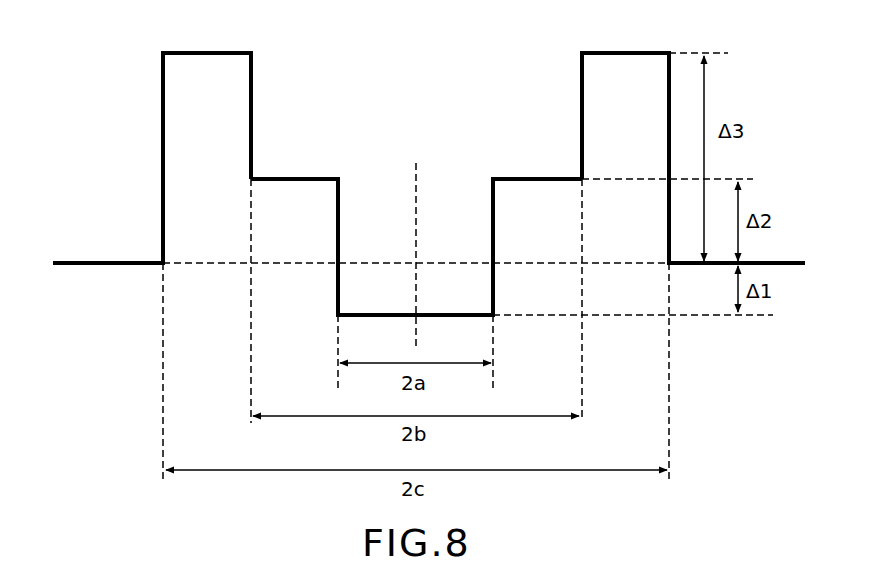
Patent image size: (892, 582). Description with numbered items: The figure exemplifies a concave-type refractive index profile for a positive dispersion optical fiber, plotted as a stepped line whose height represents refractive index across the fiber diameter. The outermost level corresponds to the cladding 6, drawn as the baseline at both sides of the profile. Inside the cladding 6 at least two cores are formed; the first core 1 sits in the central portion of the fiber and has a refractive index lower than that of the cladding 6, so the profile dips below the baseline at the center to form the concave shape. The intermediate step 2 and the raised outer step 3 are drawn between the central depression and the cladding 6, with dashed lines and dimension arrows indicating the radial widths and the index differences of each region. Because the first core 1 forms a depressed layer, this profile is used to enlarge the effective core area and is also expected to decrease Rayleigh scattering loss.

The first core 1 is at (381, 313).
The intermediate step 2 is at (292, 177).
The raised land (top step) 3 is at (203, 51).
The cladding 6 is at (103, 261).